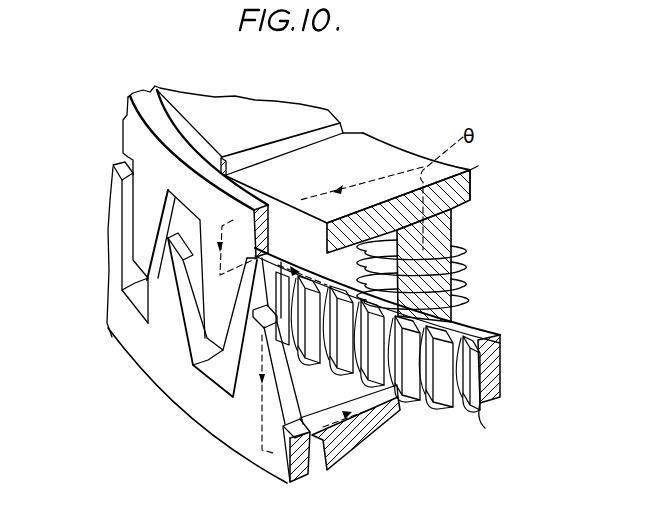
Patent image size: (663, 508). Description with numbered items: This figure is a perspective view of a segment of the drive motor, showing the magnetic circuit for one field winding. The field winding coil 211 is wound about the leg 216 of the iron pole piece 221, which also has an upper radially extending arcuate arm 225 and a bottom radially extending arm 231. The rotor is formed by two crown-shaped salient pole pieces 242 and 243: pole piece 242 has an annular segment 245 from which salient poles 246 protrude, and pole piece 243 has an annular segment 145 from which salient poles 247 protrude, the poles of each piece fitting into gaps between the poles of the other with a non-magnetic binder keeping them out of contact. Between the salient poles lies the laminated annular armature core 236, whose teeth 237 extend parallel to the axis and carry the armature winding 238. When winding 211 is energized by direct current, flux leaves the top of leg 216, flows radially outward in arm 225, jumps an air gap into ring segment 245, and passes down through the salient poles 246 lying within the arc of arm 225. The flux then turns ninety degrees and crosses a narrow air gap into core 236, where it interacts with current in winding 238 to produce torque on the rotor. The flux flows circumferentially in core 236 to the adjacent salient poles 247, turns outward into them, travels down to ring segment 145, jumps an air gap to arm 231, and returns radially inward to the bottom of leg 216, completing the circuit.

The salient pole piece 242 is at (122, 112).
The annular segment 245 is at (188, 137).
The salient pole piece 243 is at (122, 347).
The annular segment 145 is at (203, 422).
The salient pole 247 is at (185, 335).
The salient pole 246 is at (235, 293).
The upper radially extending arcuate arm 225 is at (378, 148).
The pole piece 221 is at (472, 166).
The leg 216 is at (448, 228).
The field winding coil 211 is at (460, 248).
The armature core 236 is at (483, 333).
The teeth 237 is at (500, 367).
The armature winding 238 is at (483, 417).
The bottom radially extending arm 231 is at (380, 437).